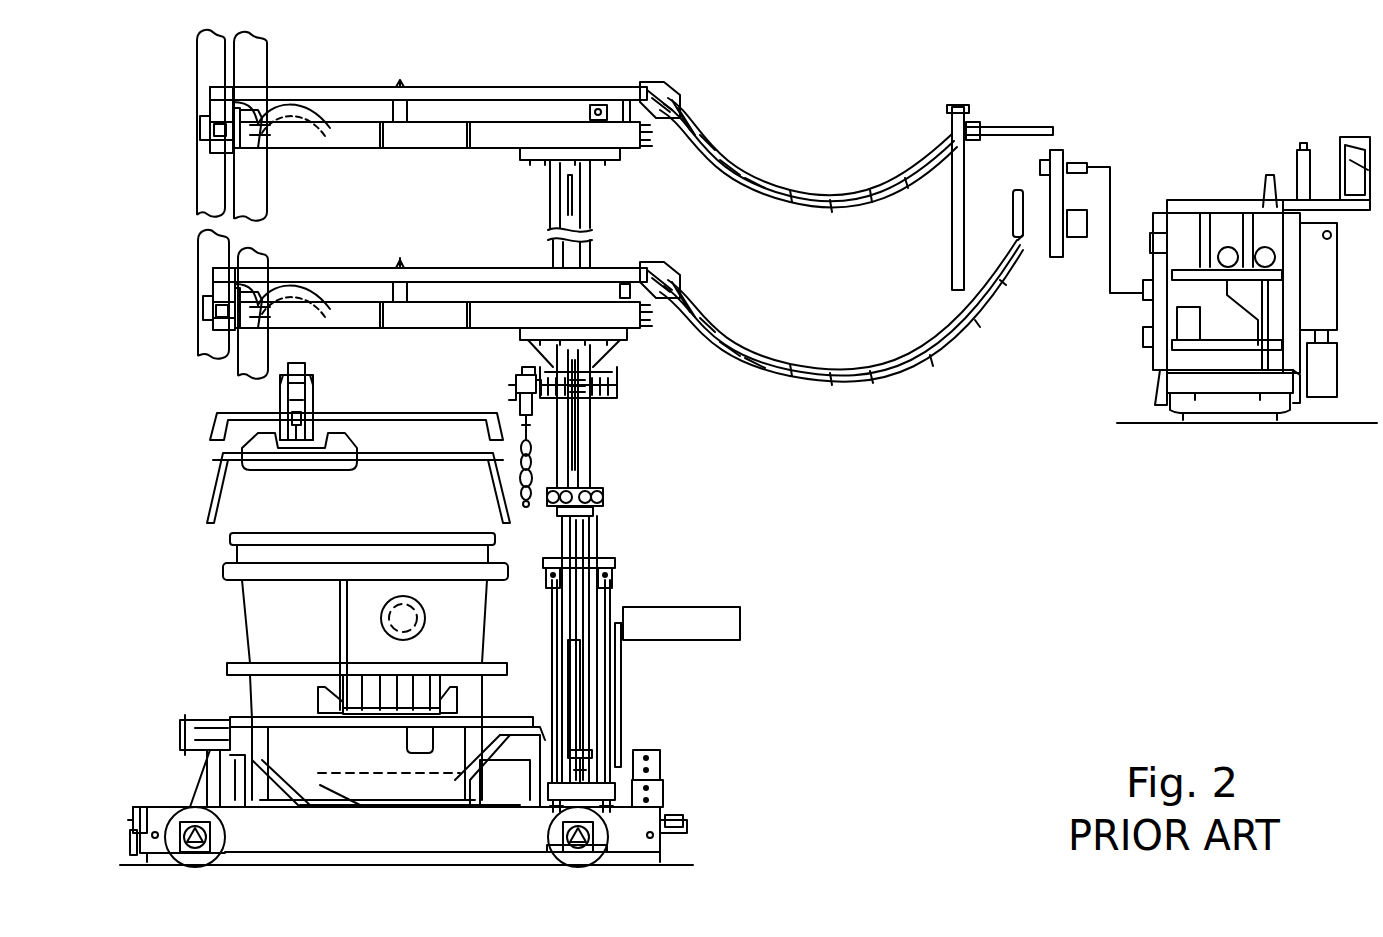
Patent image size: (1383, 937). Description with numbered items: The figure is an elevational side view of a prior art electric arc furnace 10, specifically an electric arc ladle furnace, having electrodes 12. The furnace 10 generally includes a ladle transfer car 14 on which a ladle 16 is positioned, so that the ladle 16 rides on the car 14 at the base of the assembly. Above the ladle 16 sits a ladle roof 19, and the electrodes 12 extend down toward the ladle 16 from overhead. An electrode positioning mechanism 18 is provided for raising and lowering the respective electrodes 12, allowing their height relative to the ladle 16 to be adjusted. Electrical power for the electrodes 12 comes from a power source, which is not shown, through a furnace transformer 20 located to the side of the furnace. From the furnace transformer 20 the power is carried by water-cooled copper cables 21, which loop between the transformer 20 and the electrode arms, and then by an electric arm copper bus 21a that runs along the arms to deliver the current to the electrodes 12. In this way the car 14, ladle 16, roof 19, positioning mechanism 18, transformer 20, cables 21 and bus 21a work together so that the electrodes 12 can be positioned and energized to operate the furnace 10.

The electric arc furnace 10 is at (433, 73).
The electrodes 12 is at (253, 184).
The ladle transfer car 14 is at (667, 793).
The ladle 16 is at (240, 637).
The electrode positioning mechanism 18 is at (677, 607).
The ladle roof 19 is at (230, 480).
The furnace transformer 20 is at (1205, 176).
The water-cooled copper cables 21 is at (797, 190).
The electric arm copper bus 21a is at (527, 105).